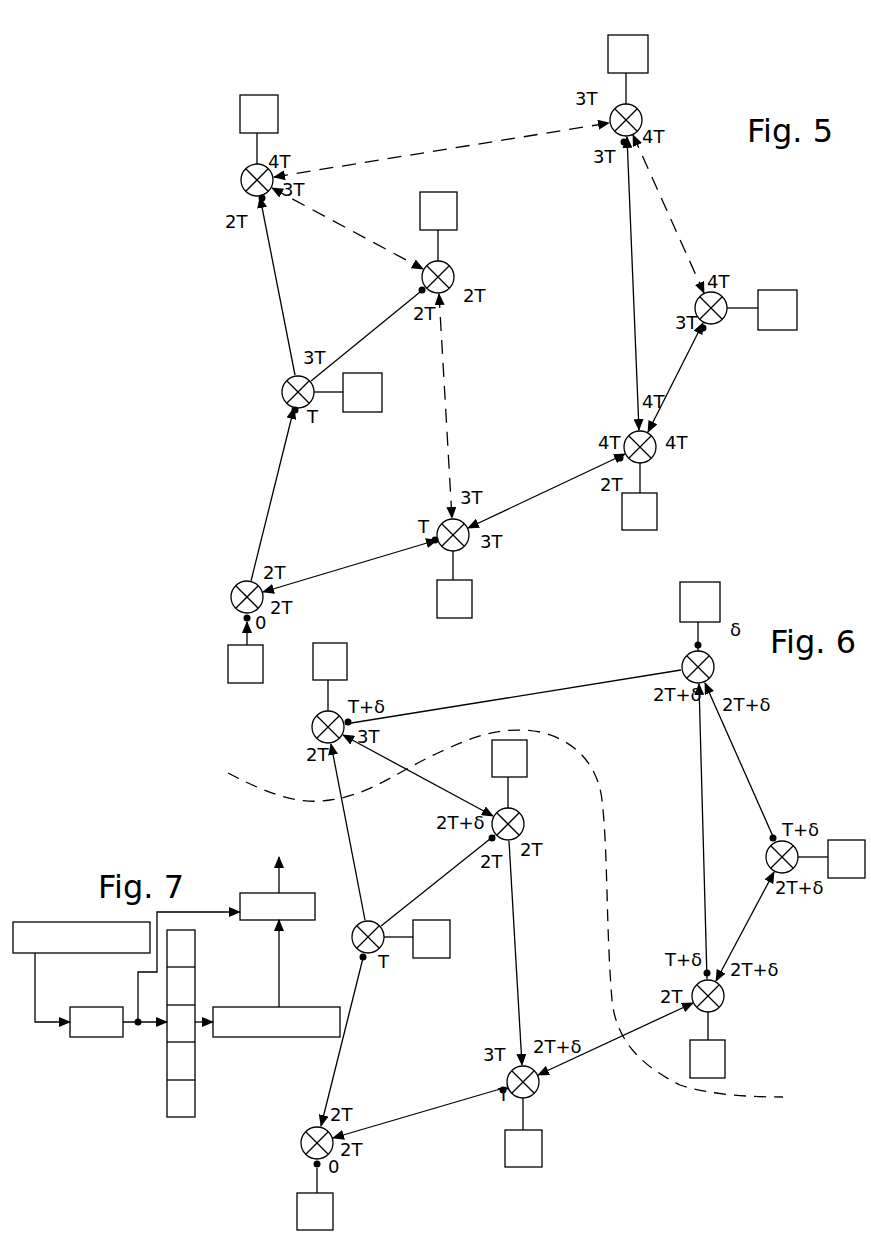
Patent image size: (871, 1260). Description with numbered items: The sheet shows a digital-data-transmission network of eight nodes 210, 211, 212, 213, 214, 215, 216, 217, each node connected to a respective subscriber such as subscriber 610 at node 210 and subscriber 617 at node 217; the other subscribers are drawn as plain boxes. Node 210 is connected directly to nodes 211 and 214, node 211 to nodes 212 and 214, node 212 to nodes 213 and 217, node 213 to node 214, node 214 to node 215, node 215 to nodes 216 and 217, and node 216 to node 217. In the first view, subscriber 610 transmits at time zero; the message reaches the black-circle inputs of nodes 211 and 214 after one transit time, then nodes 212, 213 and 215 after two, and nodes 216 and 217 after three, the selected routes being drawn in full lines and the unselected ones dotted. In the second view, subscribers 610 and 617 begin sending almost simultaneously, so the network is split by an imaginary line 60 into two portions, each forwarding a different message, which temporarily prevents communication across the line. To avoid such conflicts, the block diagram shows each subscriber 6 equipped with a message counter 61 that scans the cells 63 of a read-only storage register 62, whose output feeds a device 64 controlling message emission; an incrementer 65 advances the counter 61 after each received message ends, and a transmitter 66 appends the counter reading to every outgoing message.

In FIG. 5, the node 210 is at (232, 590).
In FIG. 6, the node 210 is at (300, 1141).
In FIG. 5, the node 211 is at (282, 386).
In FIG. 6, the node 211 is at (352, 937).
In FIG. 5, the node 212 is at (241, 178).
In FIG. 6, the node 212 is at (312, 736).
In FIG. 5, the node 213 is at (455, 277).
In FIG. 6, the node 213 is at (524, 826).
In FIG. 5, the node 214 is at (465, 551).
In FIG. 6, the node 214 is at (540, 1086).
In FIG. 5, the node 215 is at (656, 458).
In FIG. 6, the node 215 is at (724, 997).
In FIG. 5, the node 216 is at (714, 328).
In FIG. 6, the node 216 is at (769, 860).
In FIG. 5, the node 217 is at (645, 118).
In FIG. 6, the node 217 is at (716, 672).
In FIG. 5, the subscriber 610 is at (228, 666).
In FIG. 6, the subscriber 610 is at (322, 1212).
In FIG. 5, the subscriber 617 is at (642, 52).
In FIG. 6, the subscriber 617 is at (715, 598).
In FIG. 6, the imaginary line 60 is at (598, 781).
In FIG. 7, the subscriber 6 is at (203, 1085).
In FIG. 7, the message counter 61 is at (93, 1014).
In FIG. 7, the read-only storage register 62 is at (202, 959).
In FIG. 7, the cells 63 is at (167, 1093).
In FIG. 7, the controlling device 64 is at (293, 1037).
In FIG. 7, the incrementer 65 is at (50, 922).
In FIG. 7, the transmitter 66 is at (305, 893).